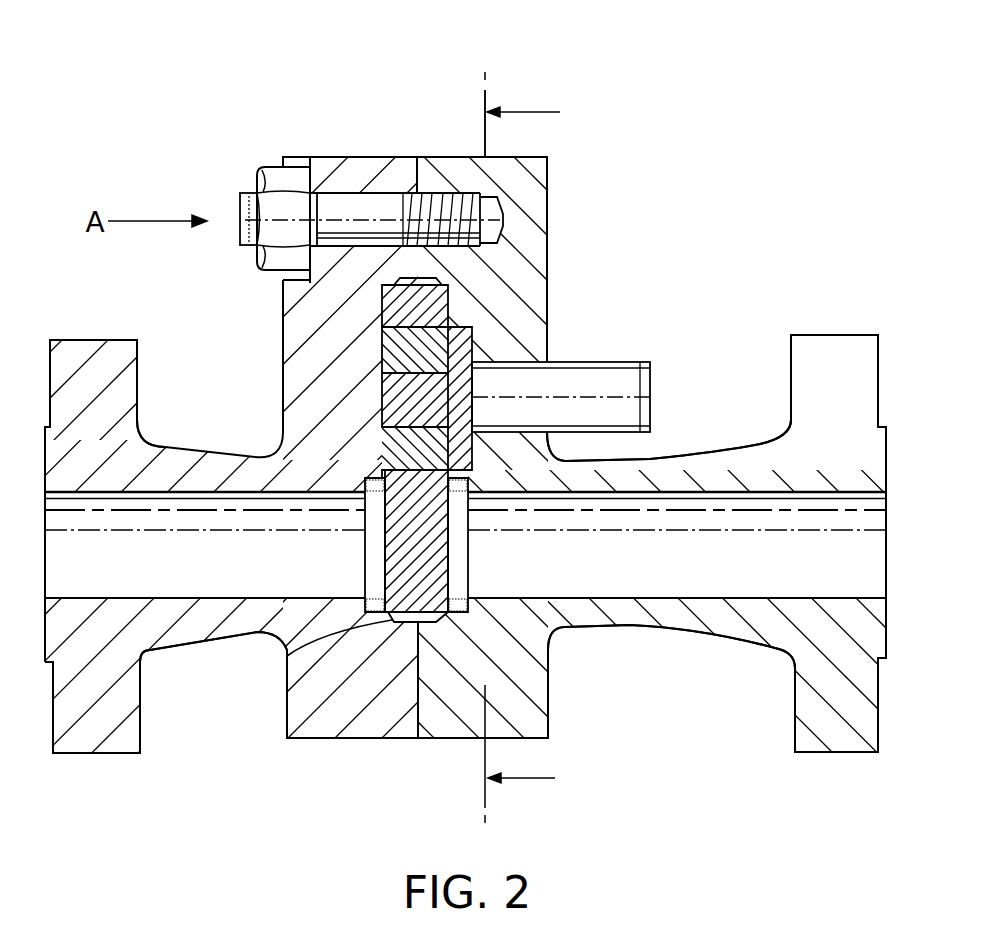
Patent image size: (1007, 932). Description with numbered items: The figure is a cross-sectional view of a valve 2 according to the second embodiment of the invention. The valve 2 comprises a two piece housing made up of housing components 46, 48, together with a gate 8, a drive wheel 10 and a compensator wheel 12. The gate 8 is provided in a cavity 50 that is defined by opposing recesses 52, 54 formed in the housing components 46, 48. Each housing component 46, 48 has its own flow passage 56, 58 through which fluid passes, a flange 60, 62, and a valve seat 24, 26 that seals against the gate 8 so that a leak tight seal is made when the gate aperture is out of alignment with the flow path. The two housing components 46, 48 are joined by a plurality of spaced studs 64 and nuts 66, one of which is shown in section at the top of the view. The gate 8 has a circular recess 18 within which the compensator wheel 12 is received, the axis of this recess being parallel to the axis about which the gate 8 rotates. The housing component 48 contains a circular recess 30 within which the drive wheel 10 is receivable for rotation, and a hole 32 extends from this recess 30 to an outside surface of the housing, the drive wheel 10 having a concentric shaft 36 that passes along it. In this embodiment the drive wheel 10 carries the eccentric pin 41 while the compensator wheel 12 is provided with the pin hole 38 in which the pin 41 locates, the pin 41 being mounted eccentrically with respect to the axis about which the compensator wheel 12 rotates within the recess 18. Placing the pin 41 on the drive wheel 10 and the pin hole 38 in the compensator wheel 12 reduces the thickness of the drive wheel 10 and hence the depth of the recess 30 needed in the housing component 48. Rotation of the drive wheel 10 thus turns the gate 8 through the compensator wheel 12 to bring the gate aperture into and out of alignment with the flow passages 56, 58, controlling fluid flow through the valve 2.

The valve 2 is at (382, 104).
The gate 8 is at (447, 298).
The drive wheel 10 is at (473, 340).
The compensator wheel 12 is at (380, 363).
The recess 18 is at (380, 327).
The valve seat 24 is at (378, 492).
The valve seat 26 is at (460, 600).
The recess 30 is at (473, 438).
The hole 32 is at (550, 360).
The concentric shaft 36 is at (640, 381).
The pin hole 38 is at (380, 428).
The pin 41 is at (380, 397).
The housing component 46 is at (190, 448).
The housing component 48 is at (765, 437).
The cavity 50 is at (421, 283).
The recess 52 is at (285, 667).
The recess 54 is at (440, 618).
The flow passage 56 is at (128, 573).
The flow passage 58 is at (770, 570).
The flange 60 is at (88, 753).
The flange 62 is at (808, 335).
The stud 64 is at (364, 205).
The nut 66 is at (272, 190).